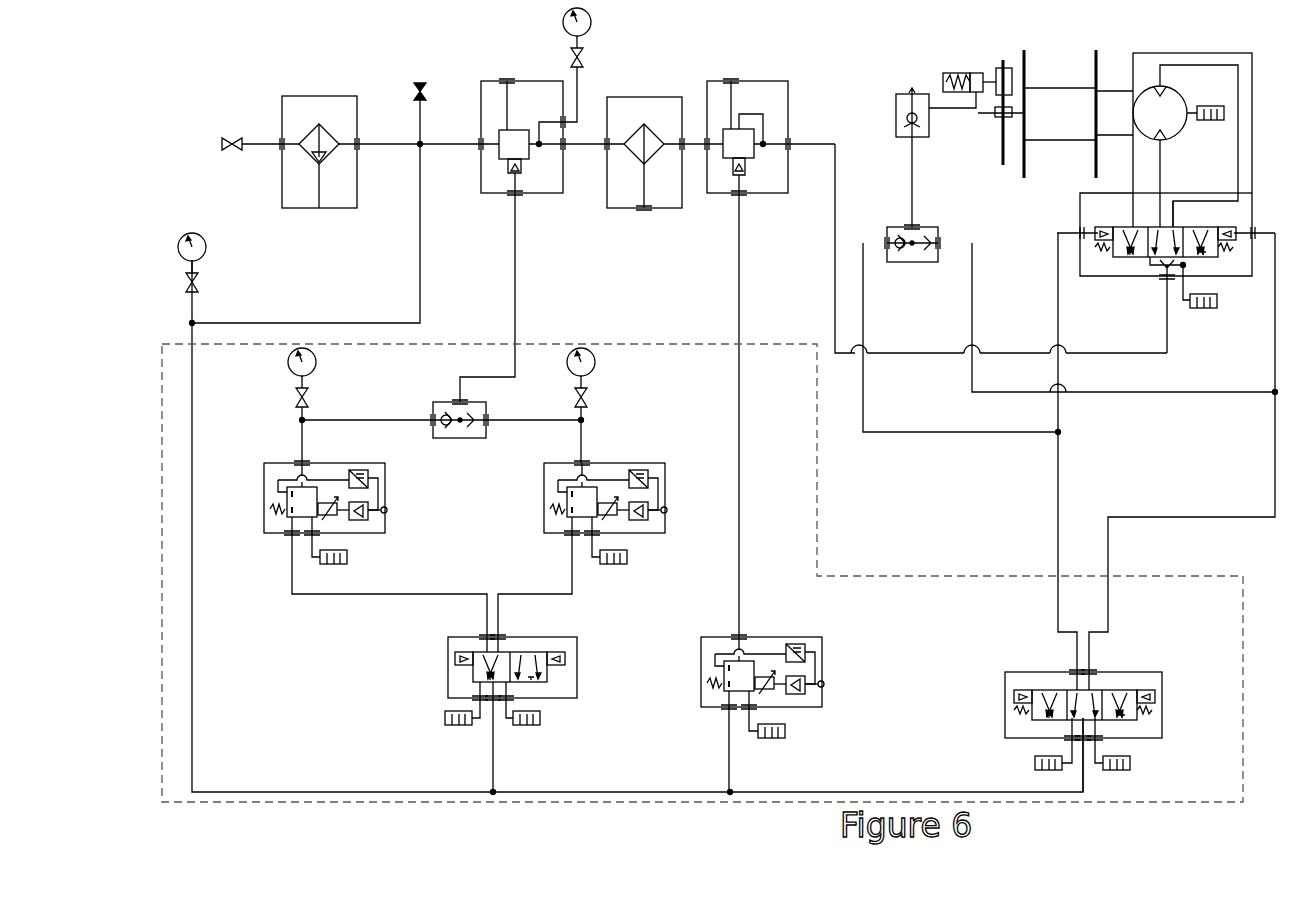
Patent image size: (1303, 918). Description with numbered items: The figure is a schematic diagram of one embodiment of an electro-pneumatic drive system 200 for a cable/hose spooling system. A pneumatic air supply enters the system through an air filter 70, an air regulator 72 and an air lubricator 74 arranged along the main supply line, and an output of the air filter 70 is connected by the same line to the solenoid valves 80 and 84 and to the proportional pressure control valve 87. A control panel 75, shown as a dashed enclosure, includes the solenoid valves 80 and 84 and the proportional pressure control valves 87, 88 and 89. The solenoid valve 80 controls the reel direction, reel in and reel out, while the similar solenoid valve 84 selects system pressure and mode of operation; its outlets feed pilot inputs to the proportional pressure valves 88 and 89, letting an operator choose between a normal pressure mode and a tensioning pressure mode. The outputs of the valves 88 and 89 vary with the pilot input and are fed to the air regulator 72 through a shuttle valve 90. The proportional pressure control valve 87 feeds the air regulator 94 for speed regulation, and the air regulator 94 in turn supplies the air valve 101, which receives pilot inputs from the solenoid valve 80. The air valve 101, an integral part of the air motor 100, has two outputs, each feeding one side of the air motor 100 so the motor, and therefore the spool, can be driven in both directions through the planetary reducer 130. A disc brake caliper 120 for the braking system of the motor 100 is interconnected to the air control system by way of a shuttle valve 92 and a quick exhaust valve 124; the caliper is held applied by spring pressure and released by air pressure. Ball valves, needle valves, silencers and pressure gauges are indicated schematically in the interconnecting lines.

The electro-pneumatic drive system 200 is at (823, 17).
The air filter 70 is at (280, 103).
The air regulator 72 is at (481, 88).
The air lubricator 74 is at (633, 208).
The air regulator 94 is at (707, 83).
The quick exhaust valve 124 is at (896, 118).
The disc brake caliper 120 is at (995, 72).
The planetary reducer 130 is at (1117, 88).
The air motor 100 is at (1183, 90).
The shuttle valve 92 is at (887, 232).
The air valve 101 is at (1140, 255).
The control panel 75 is at (817, 540).
The shuttle valve 90 is at (433, 405).
The proportional pressure control valve 88 is at (387, 507).
The proportional pressure control valve 89 is at (544, 530).
The solenoid valve 84 is at (448, 680).
The proportional pressure control valve 87 is at (702, 657).
The solenoid valve 80 is at (1005, 717).